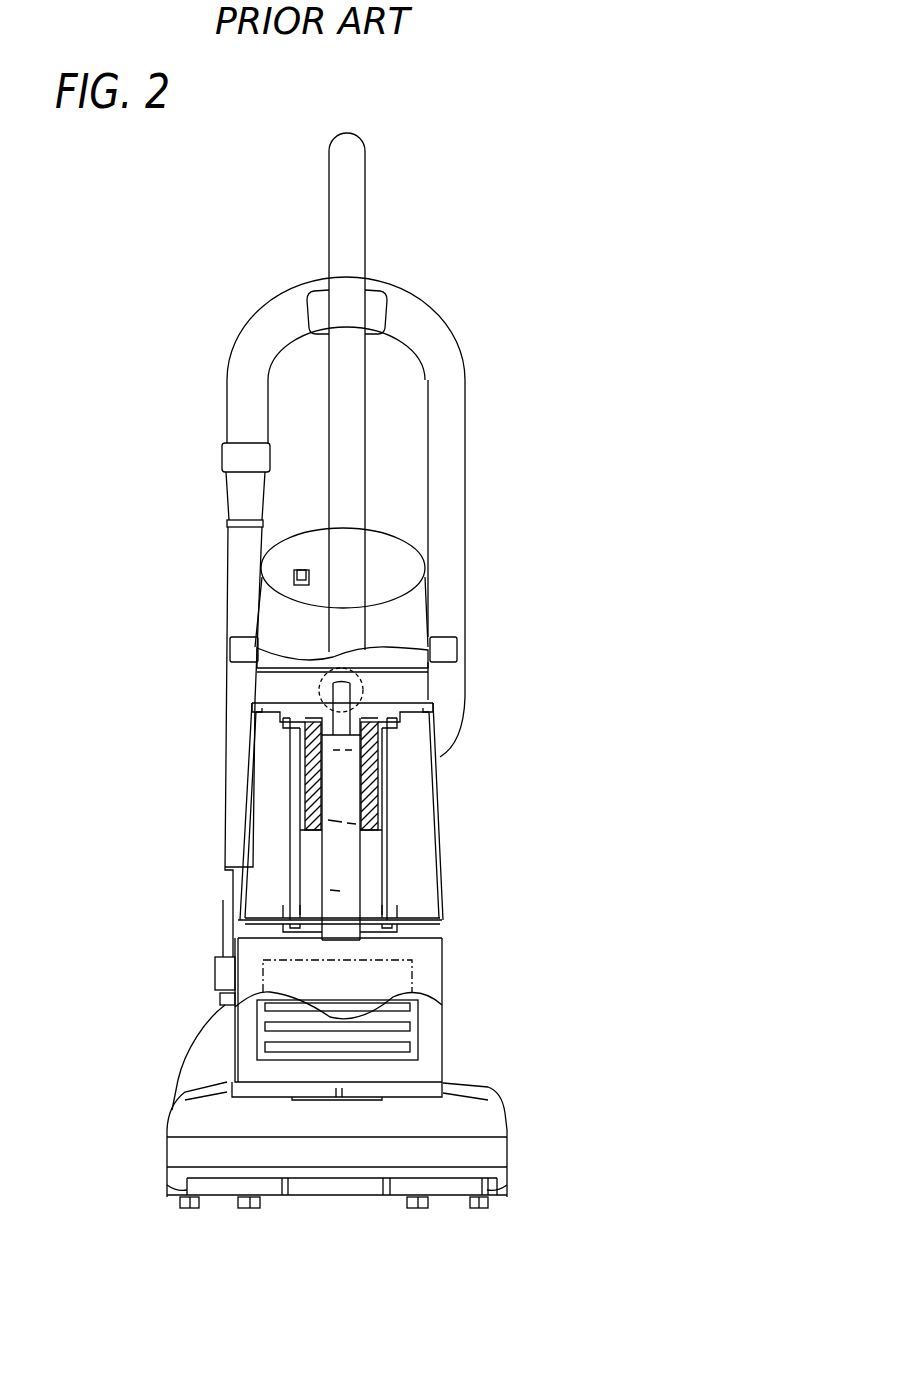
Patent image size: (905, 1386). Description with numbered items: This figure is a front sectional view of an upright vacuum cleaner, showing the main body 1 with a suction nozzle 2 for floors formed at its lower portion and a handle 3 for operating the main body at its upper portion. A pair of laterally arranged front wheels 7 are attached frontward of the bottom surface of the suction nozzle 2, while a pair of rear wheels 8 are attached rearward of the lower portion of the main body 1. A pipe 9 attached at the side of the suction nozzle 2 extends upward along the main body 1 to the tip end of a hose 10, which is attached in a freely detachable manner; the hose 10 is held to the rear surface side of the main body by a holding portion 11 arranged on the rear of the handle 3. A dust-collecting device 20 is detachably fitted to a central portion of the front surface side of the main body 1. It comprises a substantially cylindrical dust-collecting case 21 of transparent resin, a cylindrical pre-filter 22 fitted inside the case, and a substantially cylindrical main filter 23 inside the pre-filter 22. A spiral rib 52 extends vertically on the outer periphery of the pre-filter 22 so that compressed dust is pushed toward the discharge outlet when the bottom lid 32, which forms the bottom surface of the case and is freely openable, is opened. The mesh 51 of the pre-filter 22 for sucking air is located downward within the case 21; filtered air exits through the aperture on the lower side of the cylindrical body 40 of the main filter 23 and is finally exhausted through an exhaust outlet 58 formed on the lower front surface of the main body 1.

The main body 1 is at (158, 624).
The suction nozzle 2 is at (490, 1126).
The handle 3 is at (347, 245).
The front wheels 7 is at (188, 1208).
The rear wheels 8 is at (262, 1208).
The pipe 9 is at (234, 561).
The hose 10 is at (453, 563).
The holding portion 11 is at (373, 307).
The dust-collecting device 20 is at (485, 868).
The dust-collecting case 21 is at (442, 828).
The pre-filter 22 is at (388, 840).
The main filter 23 is at (380, 737).
The bottom lid 32 is at (418, 928).
The cylindrical body 40 is at (372, 910).
The mesh 51 is at (388, 900).
The spiral rib 52 is at (297, 877).
The exhaust outlet 58 is at (402, 1023).